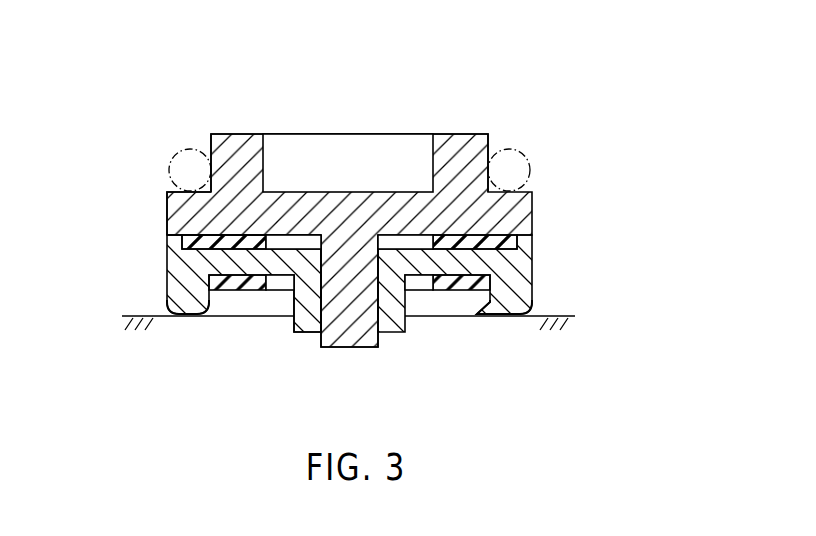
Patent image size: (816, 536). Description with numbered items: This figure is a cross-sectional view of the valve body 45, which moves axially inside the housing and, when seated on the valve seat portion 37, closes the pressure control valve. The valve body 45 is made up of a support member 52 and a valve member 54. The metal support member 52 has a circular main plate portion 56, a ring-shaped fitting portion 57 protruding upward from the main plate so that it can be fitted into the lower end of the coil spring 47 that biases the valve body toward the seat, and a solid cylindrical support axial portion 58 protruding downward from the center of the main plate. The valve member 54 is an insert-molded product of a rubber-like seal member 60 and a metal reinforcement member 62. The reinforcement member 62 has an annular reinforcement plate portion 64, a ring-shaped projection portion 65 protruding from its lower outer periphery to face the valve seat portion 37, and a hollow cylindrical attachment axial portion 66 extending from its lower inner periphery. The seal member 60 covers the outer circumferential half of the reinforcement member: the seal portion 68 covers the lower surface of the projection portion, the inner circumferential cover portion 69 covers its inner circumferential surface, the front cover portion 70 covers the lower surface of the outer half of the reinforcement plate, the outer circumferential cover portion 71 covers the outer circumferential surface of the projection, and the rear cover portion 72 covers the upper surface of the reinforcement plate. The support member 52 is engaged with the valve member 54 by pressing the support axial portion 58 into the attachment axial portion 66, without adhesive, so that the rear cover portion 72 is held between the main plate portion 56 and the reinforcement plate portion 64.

The valve seat portion 37 is at (545, 316).
The valve body 45 is at (490, 79).
The spring 47 is at (521, 150).
The support member 52 is at (541, 216).
The valve member 54 is at (558, 280).
The main plate portion 56 is at (167, 203).
The fitting portion 57 is at (234, 152).
The support axial portion 58 is at (348, 328).
The seal member 60 is at (541, 305).
The reinforcement member 62 is at (533, 250).
The reinforcement plate portion 64 is at (281, 257).
The projection portion 65 is at (167, 289).
The attachment axial portion 66 is at (304, 334).
The seal portion 68 is at (167, 305).
The inner circumferential cover portion 69 is at (221, 316).
The front cover portion 70 is at (247, 291).
The outer circumferential cover portion 71 is at (167, 257).
The rear cover portion 72 is at (206, 238).